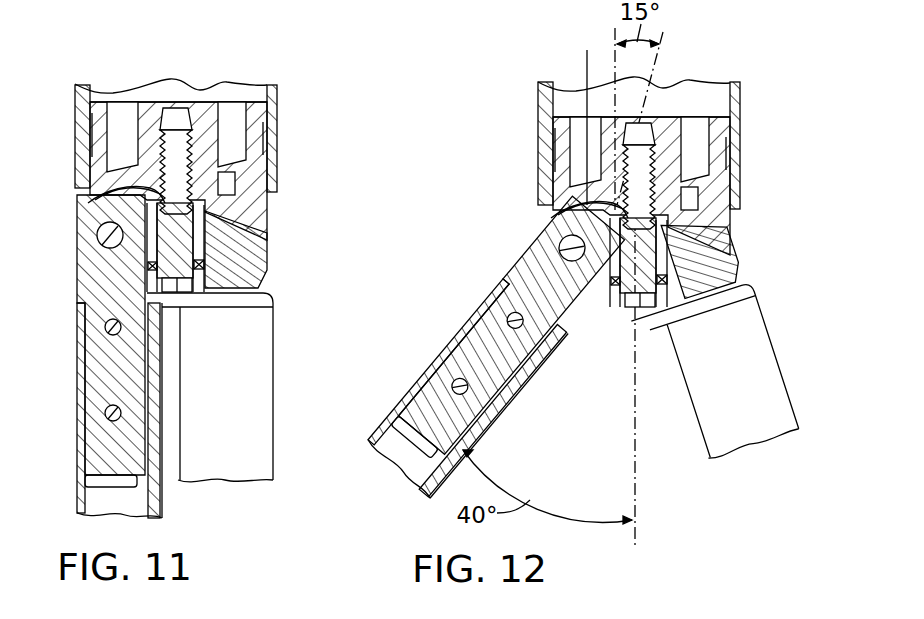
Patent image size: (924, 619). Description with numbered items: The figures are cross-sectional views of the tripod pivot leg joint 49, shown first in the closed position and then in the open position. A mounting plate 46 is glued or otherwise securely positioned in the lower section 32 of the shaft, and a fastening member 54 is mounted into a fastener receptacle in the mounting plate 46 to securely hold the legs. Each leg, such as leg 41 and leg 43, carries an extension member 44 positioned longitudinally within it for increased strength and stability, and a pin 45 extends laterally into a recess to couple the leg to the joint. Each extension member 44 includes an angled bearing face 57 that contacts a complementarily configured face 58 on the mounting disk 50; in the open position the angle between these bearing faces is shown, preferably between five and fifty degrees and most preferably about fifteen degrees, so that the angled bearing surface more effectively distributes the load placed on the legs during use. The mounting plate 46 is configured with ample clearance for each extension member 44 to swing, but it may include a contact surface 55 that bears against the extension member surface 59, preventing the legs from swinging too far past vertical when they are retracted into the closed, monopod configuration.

In FIG. 11, the lower section 32 is at (278, 140).
In FIG. 12, the lower section 32 is at (740, 142).
In FIG. 11, the leg 41 is at (77, 418).
In FIG. 12, the leg 41 is at (413, 390).
In FIG. 11, the leg 43 is at (260, 388).
In FIG. 12, the leg 43 is at (767, 362).
In FIG. 11, the extension member 44 is at (90, 280).
In FIG. 12, the extension member 44 is at (525, 268).
In FIG. 11, the pin 45 is at (98, 238).
In FIG. 12, the pin 45 is at (560, 247).
In FIG. 11, the mounting plate 46 is at (272, 210).
In FIG. 12, the mounting plate 46 is at (728, 230).
In FIG. 11, the pivot leg joint 49 is at (304, 227).
In FIG. 12, the pivot leg joint 49 is at (492, 137).
In FIG. 11, the mounting disk 50 is at (265, 257).
In FIG. 12, the mounting disk 50 is at (712, 270).
In FIG. 11, the fastening member 54 is at (198, 288).
In FIG. 12, the fastening member 54 is at (613, 310).
In FIG. 12, the contact surface 55 is at (572, 206).
In FIG. 11, the angled bearing face 57 is at (135, 205).
In FIG. 12, the angled bearing face 57 is at (603, 300).
In FIG. 11, the complementarily configured face 58 is at (134, 216).
In FIG. 12, the complementarily configured face 58 is at (615, 234).
In FIG. 12, the extension member surface 59 is at (580, 112).